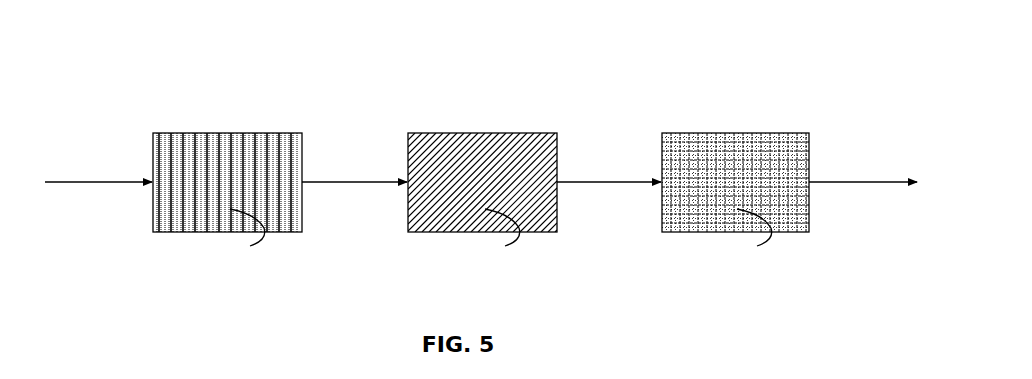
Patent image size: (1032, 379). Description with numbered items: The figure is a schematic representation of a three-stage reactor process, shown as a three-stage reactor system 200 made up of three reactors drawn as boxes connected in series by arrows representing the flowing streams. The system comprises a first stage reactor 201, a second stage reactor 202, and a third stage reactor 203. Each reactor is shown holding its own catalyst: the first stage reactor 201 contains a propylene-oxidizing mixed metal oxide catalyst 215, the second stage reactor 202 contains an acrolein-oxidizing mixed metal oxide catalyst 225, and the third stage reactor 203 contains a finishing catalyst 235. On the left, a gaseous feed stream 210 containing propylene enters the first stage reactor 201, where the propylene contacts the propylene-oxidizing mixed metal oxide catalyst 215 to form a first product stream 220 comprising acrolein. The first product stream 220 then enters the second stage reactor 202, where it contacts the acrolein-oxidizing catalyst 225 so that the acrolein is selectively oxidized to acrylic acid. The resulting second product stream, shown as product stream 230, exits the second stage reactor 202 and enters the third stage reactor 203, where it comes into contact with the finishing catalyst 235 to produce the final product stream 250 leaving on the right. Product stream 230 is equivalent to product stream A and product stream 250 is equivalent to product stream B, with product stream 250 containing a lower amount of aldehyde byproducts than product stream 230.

The three-stage reactor system 200 is at (473, 159).
The first stage reactor 201 is at (227, 185).
The second stage reactor 202 is at (485, 185).
The third stage reactor 203 is at (735, 185).
The gaseous feed stream 210 is at (98, 169).
The first product stream 220 is at (354, 169).
The product stream 230 is at (609, 169).
The product stream 250 is at (863, 169).
The propylene-oxidizing mixed metal oxide catalyst 215 is at (238, 234).
The acrolein-oxidizing mixed metal oxide catalyst 225 is at (493, 234).
The finishing catalyst 235 is at (746, 234).